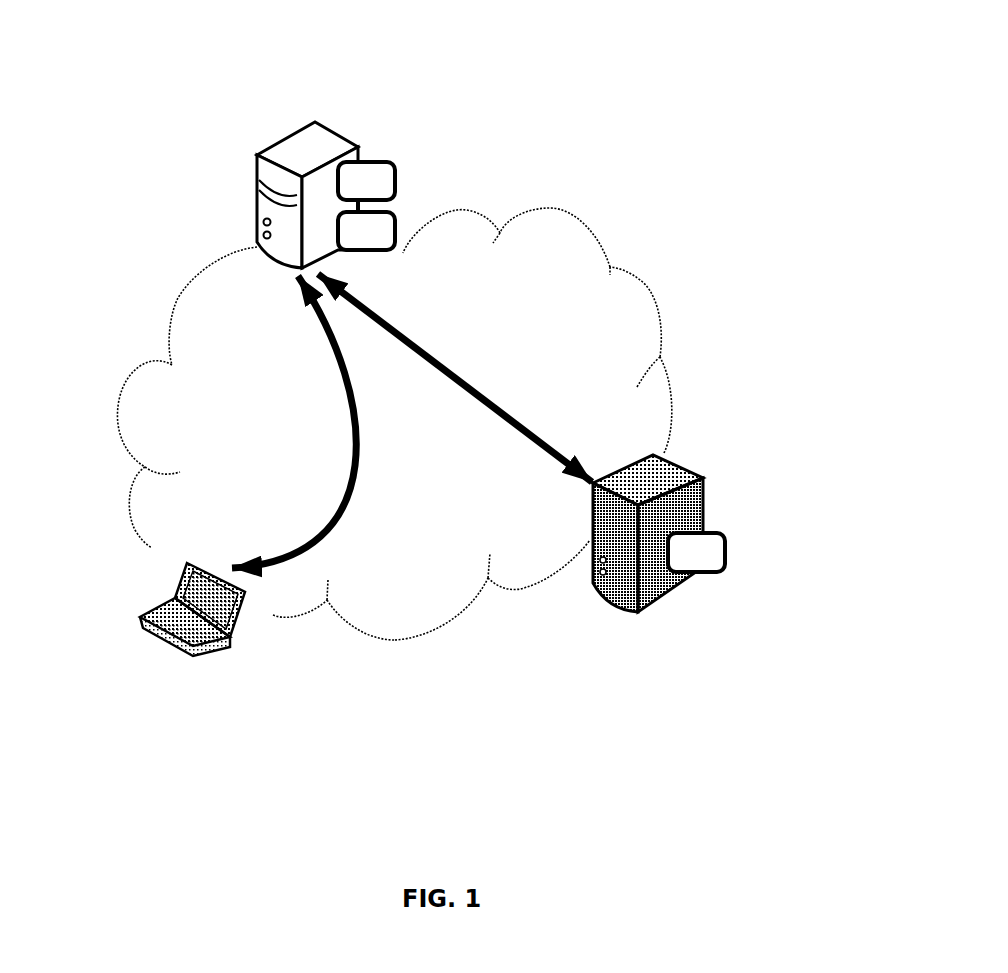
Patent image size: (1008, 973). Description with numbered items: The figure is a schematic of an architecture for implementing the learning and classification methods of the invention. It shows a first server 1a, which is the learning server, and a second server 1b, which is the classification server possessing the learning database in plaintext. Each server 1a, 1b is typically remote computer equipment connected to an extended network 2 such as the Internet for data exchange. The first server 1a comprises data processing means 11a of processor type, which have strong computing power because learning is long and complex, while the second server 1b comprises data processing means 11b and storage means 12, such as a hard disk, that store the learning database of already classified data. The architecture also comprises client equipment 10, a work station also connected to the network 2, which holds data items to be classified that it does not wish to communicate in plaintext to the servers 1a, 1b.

The first server 1a is at (676, 598).
The second server 1b is at (316, 120).
The extended network 2 is at (653, 300).
The client equipment 10 is at (146, 615).
The data processing means 11a is at (729, 542).
The data processing means 11b is at (400, 236).
The storage means 12 is at (403, 170).